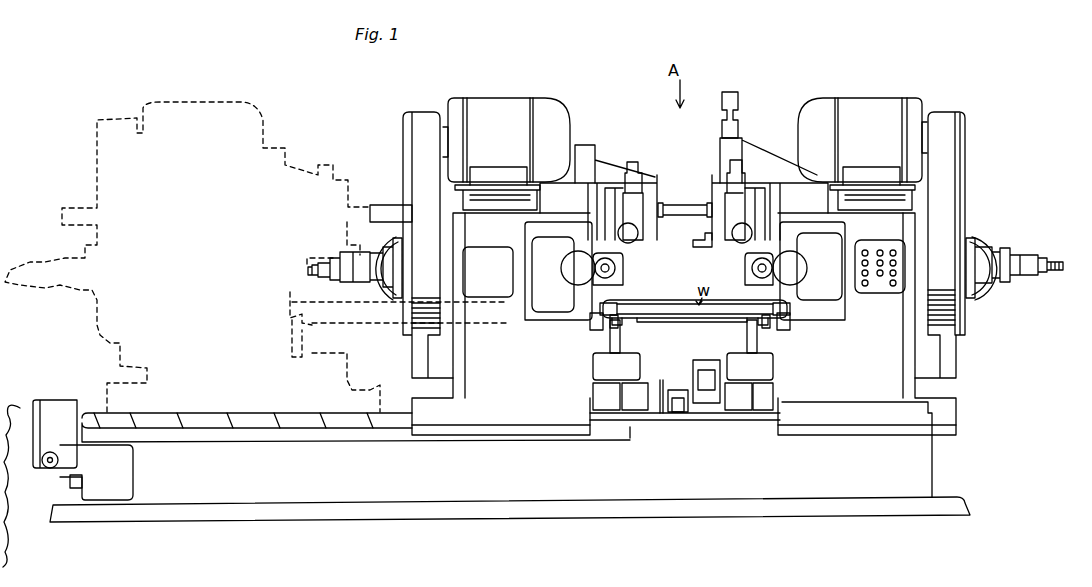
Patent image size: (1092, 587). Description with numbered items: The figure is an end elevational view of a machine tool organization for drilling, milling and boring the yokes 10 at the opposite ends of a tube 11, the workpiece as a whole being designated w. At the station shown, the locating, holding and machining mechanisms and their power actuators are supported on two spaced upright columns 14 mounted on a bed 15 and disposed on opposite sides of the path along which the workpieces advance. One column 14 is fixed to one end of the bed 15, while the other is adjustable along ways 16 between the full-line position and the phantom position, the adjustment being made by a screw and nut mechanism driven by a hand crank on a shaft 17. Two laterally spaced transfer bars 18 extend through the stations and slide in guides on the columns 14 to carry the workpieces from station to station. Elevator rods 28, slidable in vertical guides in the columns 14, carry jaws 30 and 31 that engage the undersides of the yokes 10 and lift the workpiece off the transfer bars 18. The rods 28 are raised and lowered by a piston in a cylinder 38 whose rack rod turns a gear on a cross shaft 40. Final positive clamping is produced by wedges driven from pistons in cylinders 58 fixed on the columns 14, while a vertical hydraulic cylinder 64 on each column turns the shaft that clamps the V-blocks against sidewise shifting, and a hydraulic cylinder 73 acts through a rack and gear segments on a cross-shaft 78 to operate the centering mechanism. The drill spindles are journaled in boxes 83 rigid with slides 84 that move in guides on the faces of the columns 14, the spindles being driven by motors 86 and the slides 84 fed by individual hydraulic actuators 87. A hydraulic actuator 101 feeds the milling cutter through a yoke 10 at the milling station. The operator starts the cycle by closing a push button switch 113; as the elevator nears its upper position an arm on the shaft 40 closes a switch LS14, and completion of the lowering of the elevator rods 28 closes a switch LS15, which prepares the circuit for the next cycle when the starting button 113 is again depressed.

The yoke 10 is at (610, 308).
The tube 11 is at (675, 322).
The upright column 14 is at (463, 370).
The bed 15 is at (928, 457).
The ways 16 is at (250, 423).
The shaft 17 is at (50, 457).
The transfer bar 18 is at (598, 332).
The elevator rod 28 is at (612, 345).
The jaw 30 is at (752, 323).
The jaw 31 is at (620, 323).
The cylinder 38 is at (710, 393).
The cross shaft 40 is at (663, 400).
The cylinder 58 is at (605, 373).
The hydraulic cylinder 64 is at (627, 165).
The hydraulic cylinder 73 is at (734, 116).
The cross-shaft 78 is at (683, 206).
The box 83 is at (620, 272).
The slide 84 is at (580, 288).
The motor 86 is at (507, 103).
The hydraulic actuator 87 is at (563, 273).
The hydraulic actuator 101 is at (342, 262).
The push button switch 113 is at (895, 250).
The switch LS14 is at (682, 413).
The switch LS15 is at (680, 395).